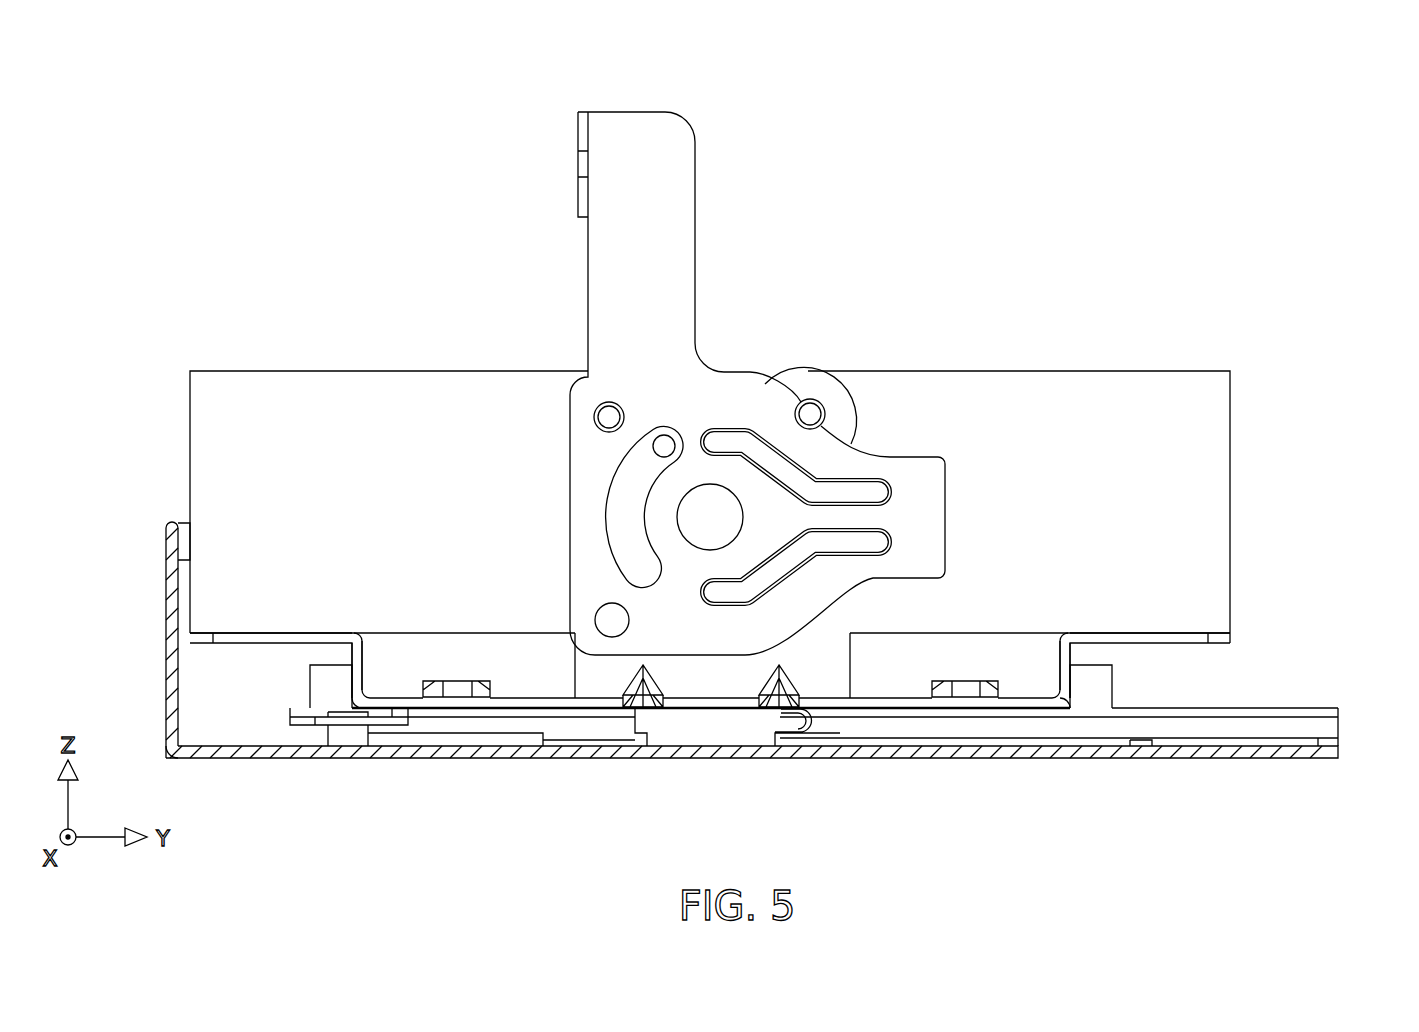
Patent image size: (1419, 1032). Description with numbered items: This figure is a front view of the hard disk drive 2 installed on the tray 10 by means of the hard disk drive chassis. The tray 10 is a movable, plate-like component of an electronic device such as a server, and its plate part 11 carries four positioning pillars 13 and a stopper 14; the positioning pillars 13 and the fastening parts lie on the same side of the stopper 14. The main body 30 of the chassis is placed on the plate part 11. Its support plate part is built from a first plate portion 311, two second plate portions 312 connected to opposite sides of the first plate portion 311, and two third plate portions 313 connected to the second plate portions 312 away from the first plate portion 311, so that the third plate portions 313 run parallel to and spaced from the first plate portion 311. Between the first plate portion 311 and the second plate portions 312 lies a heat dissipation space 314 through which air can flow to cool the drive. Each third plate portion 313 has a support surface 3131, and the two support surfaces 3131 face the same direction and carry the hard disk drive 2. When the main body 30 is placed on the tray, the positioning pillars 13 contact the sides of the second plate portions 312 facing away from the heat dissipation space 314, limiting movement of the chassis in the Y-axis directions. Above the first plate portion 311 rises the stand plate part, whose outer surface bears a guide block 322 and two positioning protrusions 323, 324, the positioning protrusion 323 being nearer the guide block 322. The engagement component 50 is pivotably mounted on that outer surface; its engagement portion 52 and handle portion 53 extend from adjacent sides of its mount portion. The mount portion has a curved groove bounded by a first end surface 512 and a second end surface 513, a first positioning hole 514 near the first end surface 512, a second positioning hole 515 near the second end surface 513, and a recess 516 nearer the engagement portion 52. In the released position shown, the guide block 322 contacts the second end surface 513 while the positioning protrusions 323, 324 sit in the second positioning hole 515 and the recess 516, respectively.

The hard disk drive 2 is at (1148, 400).
The tray 10 is at (1316, 693).
The plate part 11 is at (240, 713).
The positioning pillars 13 is at (330, 688).
The stopper 14 is at (710, 723).
The main body 30 is at (706, 679).
The engagement component 50 is at (751, 420).
The engagement portion 52 is at (935, 488).
The handle portion 53 is at (660, 150).
The first plate portion 311 is at (513, 700).
The second plate portions 312 is at (357, 670).
The third plate portions 313 is at (252, 638).
The heat dissipation space 314 is at (405, 663).
The guide block 322 is at (667, 439).
The positioning protrusion 323 is at (606, 418).
The positioning protrusion 324 is at (812, 413).
The first end surface 512 is at (648, 583).
The second end surface 513 is at (655, 458).
The first positioning hole 514 is at (612, 622).
The second positioning hole 515 is at (608, 393).
The recess 516 is at (803, 393).
The support surface 3131 is at (270, 628).